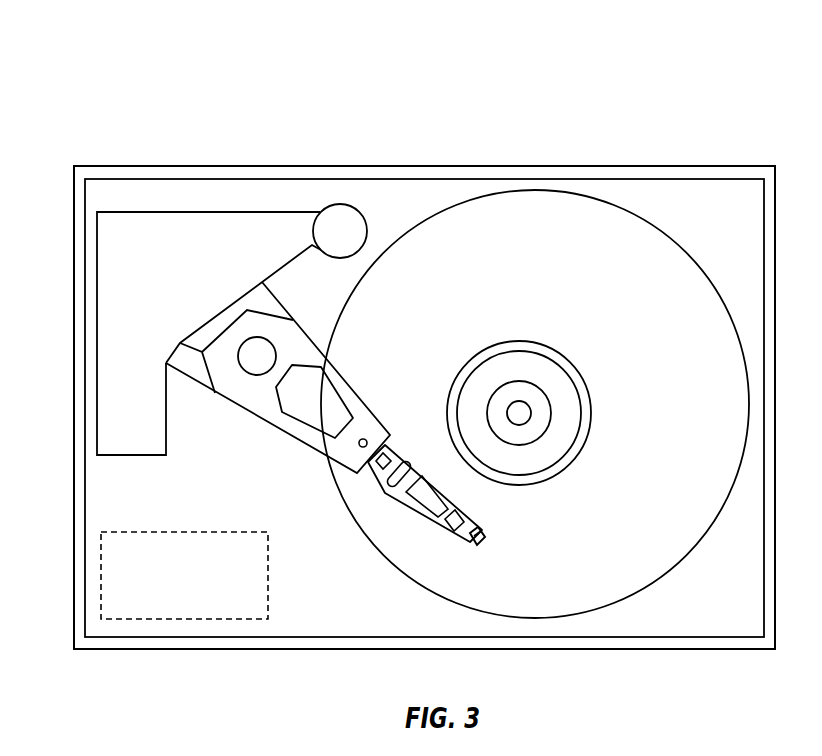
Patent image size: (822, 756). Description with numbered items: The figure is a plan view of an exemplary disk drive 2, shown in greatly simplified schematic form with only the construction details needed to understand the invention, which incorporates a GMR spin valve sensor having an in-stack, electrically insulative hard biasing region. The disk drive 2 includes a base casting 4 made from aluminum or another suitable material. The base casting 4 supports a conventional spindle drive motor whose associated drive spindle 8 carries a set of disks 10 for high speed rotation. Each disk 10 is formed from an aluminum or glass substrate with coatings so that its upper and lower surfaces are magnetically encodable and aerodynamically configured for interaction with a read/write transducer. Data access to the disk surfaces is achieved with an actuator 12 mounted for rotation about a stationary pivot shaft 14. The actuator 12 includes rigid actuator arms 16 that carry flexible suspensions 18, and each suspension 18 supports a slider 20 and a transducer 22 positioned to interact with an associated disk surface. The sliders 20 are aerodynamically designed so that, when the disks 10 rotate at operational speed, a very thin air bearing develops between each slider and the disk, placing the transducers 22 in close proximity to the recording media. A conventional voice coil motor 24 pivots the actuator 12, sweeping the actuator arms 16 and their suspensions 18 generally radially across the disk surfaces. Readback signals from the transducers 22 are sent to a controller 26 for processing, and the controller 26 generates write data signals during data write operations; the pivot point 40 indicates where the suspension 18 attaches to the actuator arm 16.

The disk drive 2 is at (80, 72).
The base casting 4 is at (217, 166).
The drive spindle 8 is at (523, 413).
The disk 10 is at (543, 284).
The actuator 12 is at (243, 401).
The stationary pivot shaft 14 is at (250, 343).
The actuator arm 16 is at (300, 437).
The suspension 18 is at (470, 558).
The slider 20 is at (494, 526).
The transducer 22 is at (485, 546).
The voice coil motor 24 is at (268, 294).
The controller 26 is at (268, 616).
The pivot point 40 is at (366, 438).